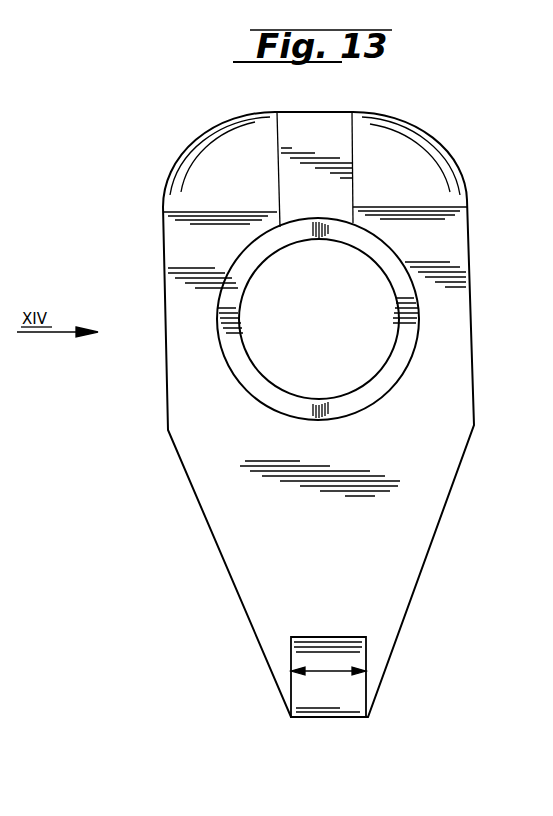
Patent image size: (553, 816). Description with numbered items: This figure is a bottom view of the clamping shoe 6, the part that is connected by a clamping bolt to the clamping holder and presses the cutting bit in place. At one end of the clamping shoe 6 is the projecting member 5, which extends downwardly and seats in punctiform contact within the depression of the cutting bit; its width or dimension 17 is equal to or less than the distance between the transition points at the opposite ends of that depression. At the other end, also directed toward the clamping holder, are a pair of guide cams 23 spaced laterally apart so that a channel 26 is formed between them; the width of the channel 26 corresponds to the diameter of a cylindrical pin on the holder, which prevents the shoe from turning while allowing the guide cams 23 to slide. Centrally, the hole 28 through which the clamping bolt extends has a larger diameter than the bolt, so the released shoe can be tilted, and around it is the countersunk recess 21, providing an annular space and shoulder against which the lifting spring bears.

The projecting member 5 is at (308, 687).
The clamping shoe 6 is at (158, 384).
The width or dimension 17 is at (328, 672).
The countersunk recess 21 is at (418, 324).
The guide cams 23 is at (218, 147).
The channel 26 is at (350, 129).
The hole 28 is at (393, 297).